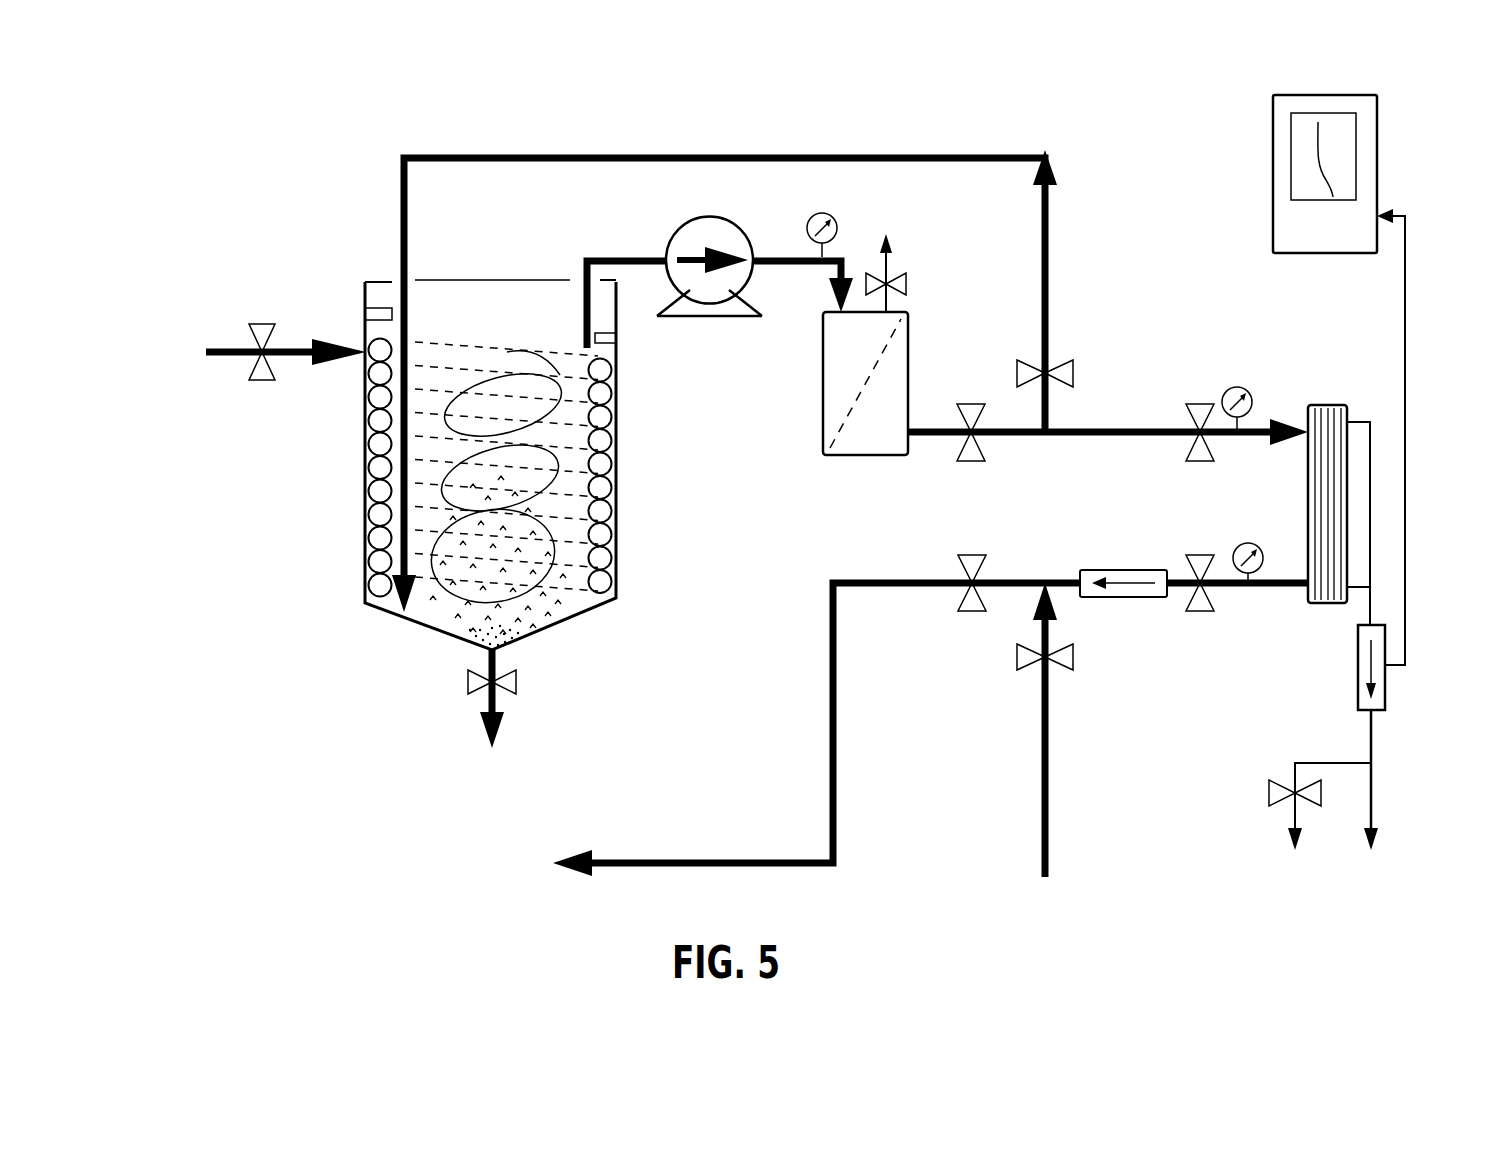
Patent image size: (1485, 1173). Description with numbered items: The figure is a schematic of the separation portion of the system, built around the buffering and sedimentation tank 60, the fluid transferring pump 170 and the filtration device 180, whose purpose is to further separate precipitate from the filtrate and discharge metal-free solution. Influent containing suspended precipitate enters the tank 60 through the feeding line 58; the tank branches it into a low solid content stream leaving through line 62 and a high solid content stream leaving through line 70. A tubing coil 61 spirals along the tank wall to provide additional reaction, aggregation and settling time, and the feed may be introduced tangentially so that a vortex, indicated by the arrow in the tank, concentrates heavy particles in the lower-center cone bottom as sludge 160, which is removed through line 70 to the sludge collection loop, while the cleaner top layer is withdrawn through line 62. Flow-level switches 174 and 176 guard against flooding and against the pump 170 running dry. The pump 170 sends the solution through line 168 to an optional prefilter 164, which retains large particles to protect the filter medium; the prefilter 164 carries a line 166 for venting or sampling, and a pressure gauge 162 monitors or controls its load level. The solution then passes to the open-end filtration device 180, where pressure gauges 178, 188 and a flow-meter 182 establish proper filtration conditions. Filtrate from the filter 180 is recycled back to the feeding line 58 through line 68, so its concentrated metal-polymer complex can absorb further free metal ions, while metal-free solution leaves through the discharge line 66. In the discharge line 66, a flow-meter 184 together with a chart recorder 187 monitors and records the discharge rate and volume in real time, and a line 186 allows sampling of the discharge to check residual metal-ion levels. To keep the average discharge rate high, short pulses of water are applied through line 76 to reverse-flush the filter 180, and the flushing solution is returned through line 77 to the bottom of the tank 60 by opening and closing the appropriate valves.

The feeding line 58 is at (216, 358).
The buffering and sedimentation tank 60 is at (408, 628).
The tubing coil 61 is at (488, 350).
The low solid content stream line 62 is at (642, 256).
The discharge line 66 is at (1372, 745).
The filtrate recycle line 68 is at (722, 863).
The high solid content stream line 70 is at (500, 713).
The flushing water line 76 is at (1050, 762).
The flushing return line 77 is at (1049, 280).
The sludge 160 is at (512, 642).
The pressure gauge 162 is at (837, 228).
The prefilter 164 is at (823, 378).
The venting line 166 is at (886, 272).
The pump discharge line 168 is at (787, 266).
The fluid transferring pump 170 is at (735, 217).
The flow-level switch 174 is at (378, 308).
The flow-level switch 176 is at (603, 333).
The pressure gauge 178 is at (1243, 389).
The filtration device 180 is at (1330, 405).
The flow-meter 182 is at (1160, 597).
The flow-meter 184 is at (1358, 665).
The sampling line 186 is at (1325, 747).
The chart recorder 187 is at (1273, 140).
The pressure gauge 188 is at (1256, 545).